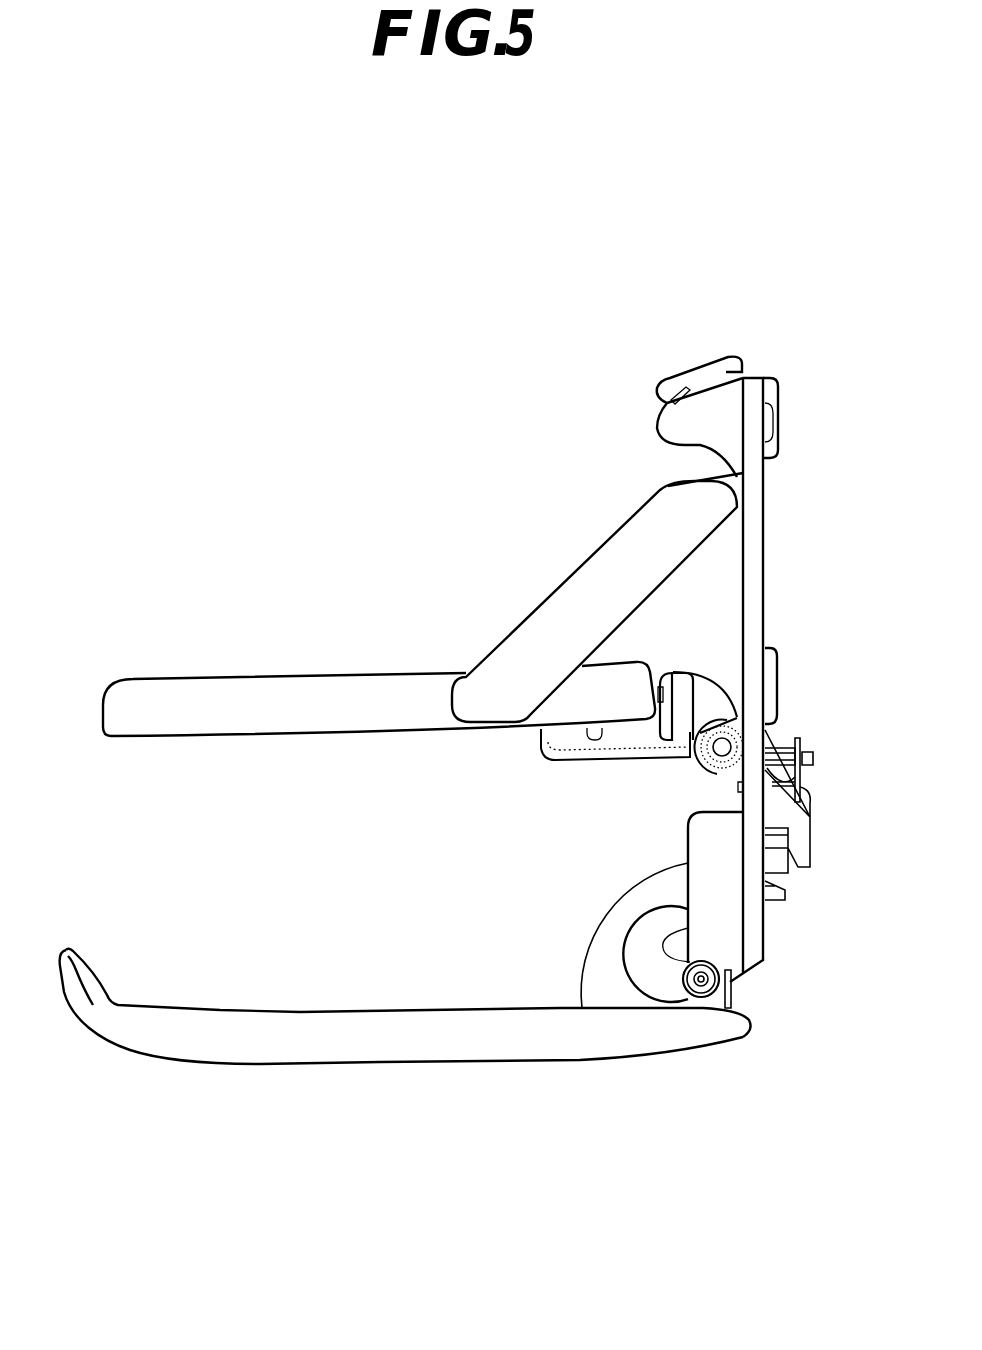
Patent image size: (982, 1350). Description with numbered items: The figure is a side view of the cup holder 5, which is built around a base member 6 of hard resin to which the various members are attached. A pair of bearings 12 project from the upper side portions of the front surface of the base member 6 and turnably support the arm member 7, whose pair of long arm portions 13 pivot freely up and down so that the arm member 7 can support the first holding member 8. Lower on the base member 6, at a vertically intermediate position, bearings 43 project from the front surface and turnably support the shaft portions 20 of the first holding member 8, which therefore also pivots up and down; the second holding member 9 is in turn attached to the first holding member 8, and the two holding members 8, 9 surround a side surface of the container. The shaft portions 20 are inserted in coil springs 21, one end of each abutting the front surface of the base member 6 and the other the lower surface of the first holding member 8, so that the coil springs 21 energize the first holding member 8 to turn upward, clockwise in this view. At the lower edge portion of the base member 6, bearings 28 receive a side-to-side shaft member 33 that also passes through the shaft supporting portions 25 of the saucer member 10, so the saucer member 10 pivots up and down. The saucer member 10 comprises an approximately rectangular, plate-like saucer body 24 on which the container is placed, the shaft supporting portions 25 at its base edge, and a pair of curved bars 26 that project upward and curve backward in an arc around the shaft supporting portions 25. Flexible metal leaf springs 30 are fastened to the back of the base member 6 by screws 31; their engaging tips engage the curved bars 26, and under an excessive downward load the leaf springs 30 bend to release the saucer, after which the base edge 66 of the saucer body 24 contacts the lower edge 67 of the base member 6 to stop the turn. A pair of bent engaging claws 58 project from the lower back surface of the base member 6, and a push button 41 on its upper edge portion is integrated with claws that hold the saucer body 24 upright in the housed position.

The cup holder 5 is at (594, 336).
The base member 6 is at (766, 592).
The arm member 7 is at (542, 598).
The first holding member 8 is at (688, 665).
The second holding member 9 is at (271, 672).
The saucer member 10 is at (285, 1074).
The bearings 12 is at (735, 529).
The arm portions 13 is at (611, 540).
The shaft portions 20 is at (770, 732).
The coil springs 21 is at (700, 757).
The saucer body 24 is at (378, 1009).
The shaft supporting portions 25 is at (682, 984).
The curved bars 26 is at (594, 936).
The bearings 28 is at (693, 960).
The leaf springs 30 is at (806, 782).
The screws 31 is at (806, 813).
The shaft member 33 is at (733, 986).
The push button 41 is at (708, 372).
The bearings 43 is at (737, 720).
The engaging claws 58 is at (811, 862).
The base edge 66 is at (753, 1031).
The lower edge 67 is at (768, 968).